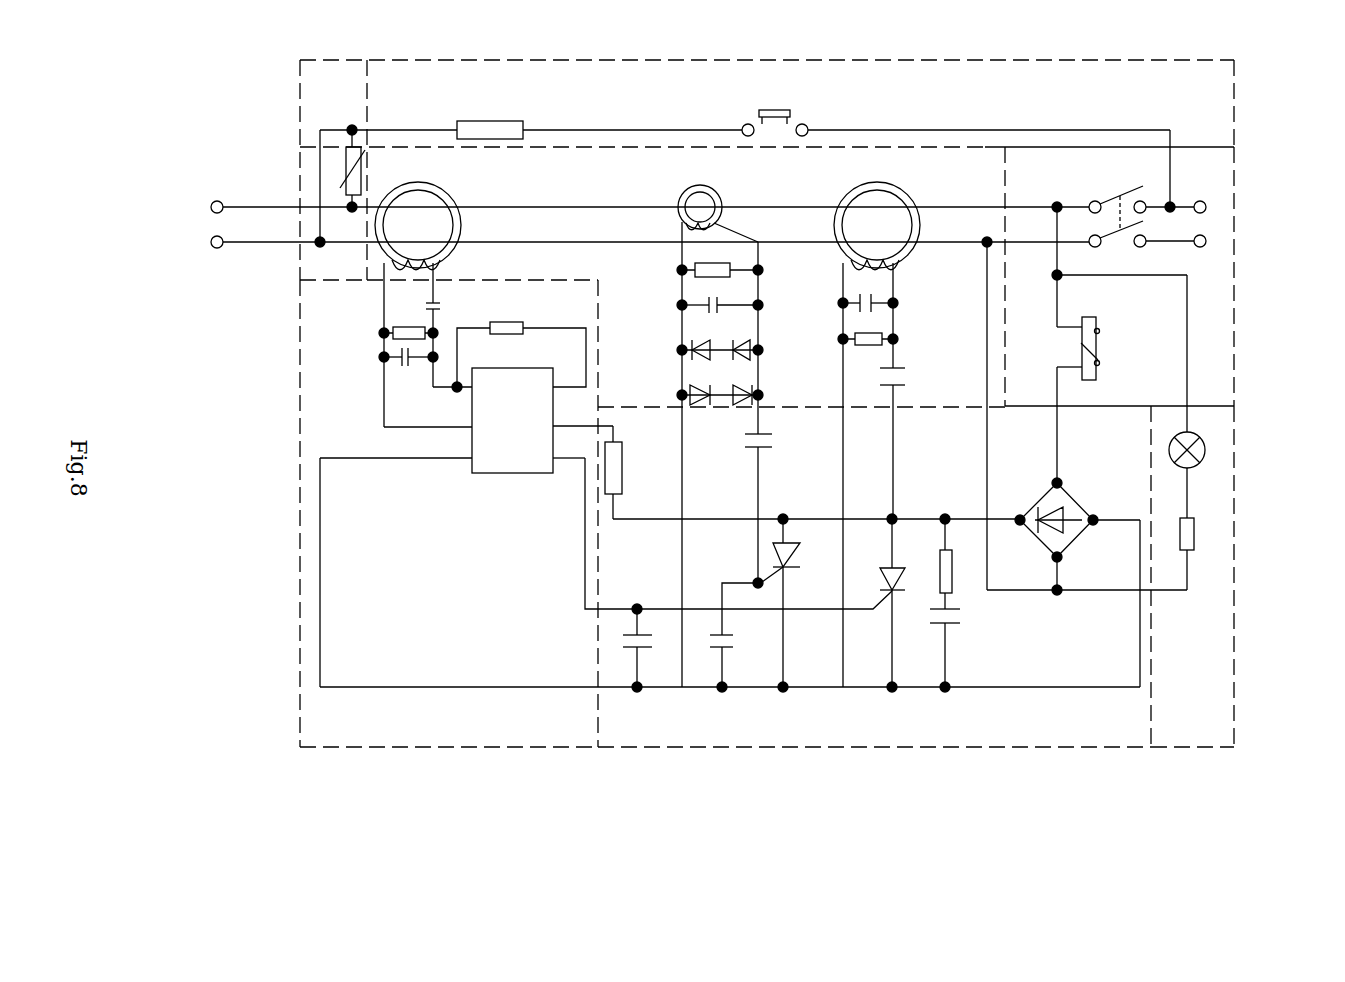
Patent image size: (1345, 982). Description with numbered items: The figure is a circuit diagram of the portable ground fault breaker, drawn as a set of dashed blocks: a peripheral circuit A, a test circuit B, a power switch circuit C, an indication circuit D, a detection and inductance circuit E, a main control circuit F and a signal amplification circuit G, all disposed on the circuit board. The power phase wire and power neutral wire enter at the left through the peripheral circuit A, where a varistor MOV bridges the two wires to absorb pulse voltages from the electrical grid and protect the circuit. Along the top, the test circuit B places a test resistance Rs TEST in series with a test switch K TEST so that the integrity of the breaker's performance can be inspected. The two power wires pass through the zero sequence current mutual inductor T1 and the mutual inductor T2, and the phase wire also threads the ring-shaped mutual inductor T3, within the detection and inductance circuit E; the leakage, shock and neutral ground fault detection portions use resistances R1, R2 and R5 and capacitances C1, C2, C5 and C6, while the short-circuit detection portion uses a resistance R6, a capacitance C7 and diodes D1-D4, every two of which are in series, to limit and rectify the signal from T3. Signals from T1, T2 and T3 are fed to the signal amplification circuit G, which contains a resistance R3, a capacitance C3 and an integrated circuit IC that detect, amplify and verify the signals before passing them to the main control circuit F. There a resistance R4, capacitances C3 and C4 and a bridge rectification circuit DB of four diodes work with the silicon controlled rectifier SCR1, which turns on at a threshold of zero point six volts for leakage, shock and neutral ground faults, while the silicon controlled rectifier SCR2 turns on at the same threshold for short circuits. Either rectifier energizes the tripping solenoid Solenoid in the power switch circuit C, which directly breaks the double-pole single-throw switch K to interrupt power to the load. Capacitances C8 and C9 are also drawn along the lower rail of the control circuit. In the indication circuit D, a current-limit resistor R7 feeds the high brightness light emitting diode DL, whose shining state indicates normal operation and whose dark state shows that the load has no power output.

The peripheral circuit A is at (263, 220).
The test circuit B is at (808, 116).
The power switch circuit C is at (1163, 276).
The indication circuit D is at (1237, 576).
The detection and inductance circuit E is at (950, 576).
The main control circuit F is at (874, 796).
The signal amplification circuit G is at (431, 573).
The varistor MOV is at (378, 168).
The test resistance Rs TEST is at (531, 115).
The test switch K TEST is at (958, 146).
The zero sequence current mutual inductor T1 is at (418, 289).
The mutual inductor T2 is at (877, 421).
The ring-shaped mutual inductor T3 is at (718, 426).
The resistance R1 is at (408, 318).
The resistance R2 is at (519, 344).
The resistance R3 is at (634, 480).
The resistance R4 is at (961, 561).
The resistance R5 is at (868, 352).
The resistance R6 is at (720, 257).
The current-limit resistor R7 is at (1206, 554).
The capacitance C1 is at (450, 311).
The capacitance C2 is at (408, 368).
The capacitance C3 is at (627, 650).
The capacitance C4 is at (962, 649).
The capacitance C5 is at (910, 380).
The capacitance C6 is at (882, 304).
The capacitance C7 is at (720, 317).
The capacitor C8 is at (773, 441).
The capacitor C9 is at (738, 635).
The diodes D1-D4 is at (720, 372).
The integrated circuit IC is at (512, 420).
The silicon controlled rectifier SCR1 is at (916, 603).
The silicon controlled rectifier SCR2 is at (804, 603).
The bridge rectification circuit DB is at (1059, 481).
The double-pole single-throw switch K is at (1147, 206).
The tripping solenoid Solenoid is at (1128, 348).
The high brightness light emitting diode DL is at (1202, 396).